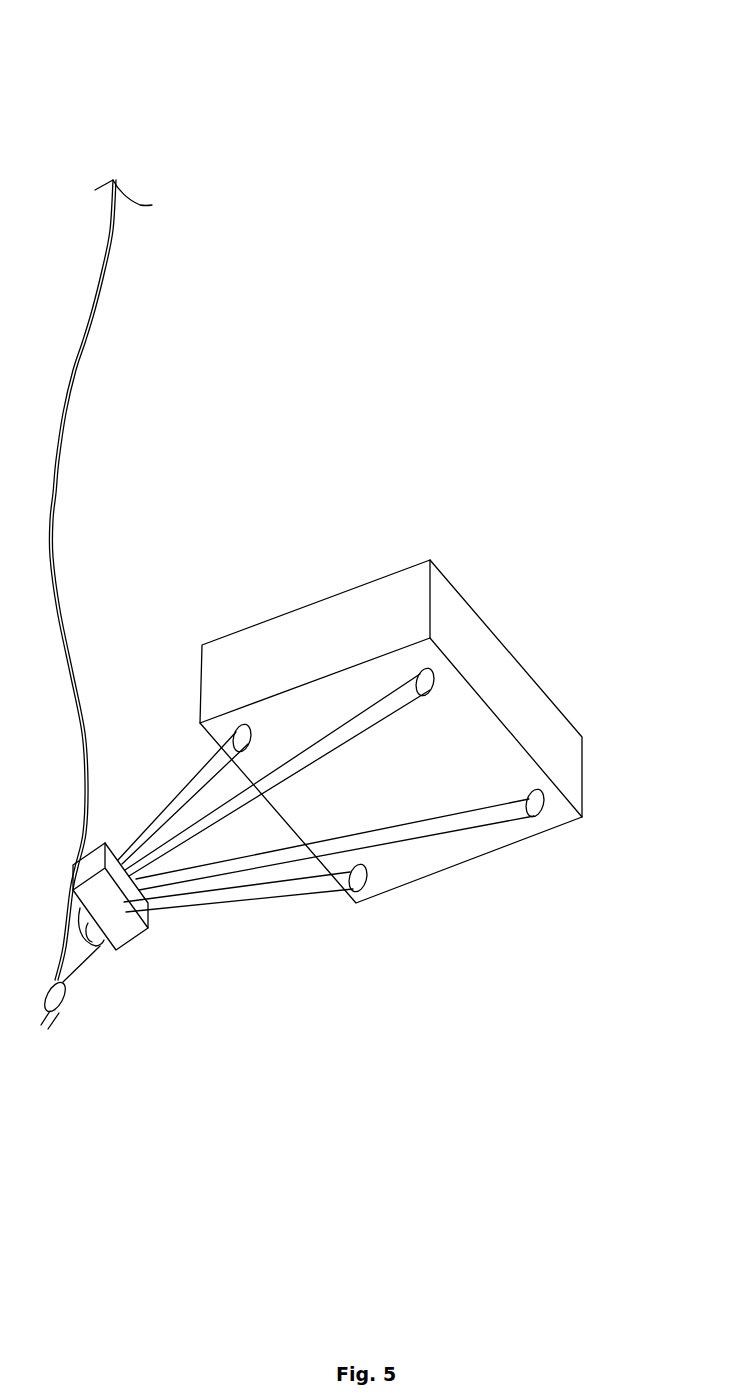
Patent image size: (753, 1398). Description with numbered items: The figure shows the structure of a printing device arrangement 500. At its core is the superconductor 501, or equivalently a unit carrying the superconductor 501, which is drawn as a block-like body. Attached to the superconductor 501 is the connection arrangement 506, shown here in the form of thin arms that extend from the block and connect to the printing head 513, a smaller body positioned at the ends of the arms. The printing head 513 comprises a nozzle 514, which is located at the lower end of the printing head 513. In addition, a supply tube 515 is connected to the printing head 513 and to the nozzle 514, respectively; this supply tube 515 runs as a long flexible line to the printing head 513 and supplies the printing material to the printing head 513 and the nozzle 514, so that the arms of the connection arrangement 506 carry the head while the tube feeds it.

The printing device arrangement 500 is at (342, 98).
The superconductor 501 is at (507, 667).
The connection arrangement 506 is at (282, 893).
The printing head 513 is at (75, 968).
The nozzle 514 is at (40, 1027).
The supply tube 515 is at (58, 488).